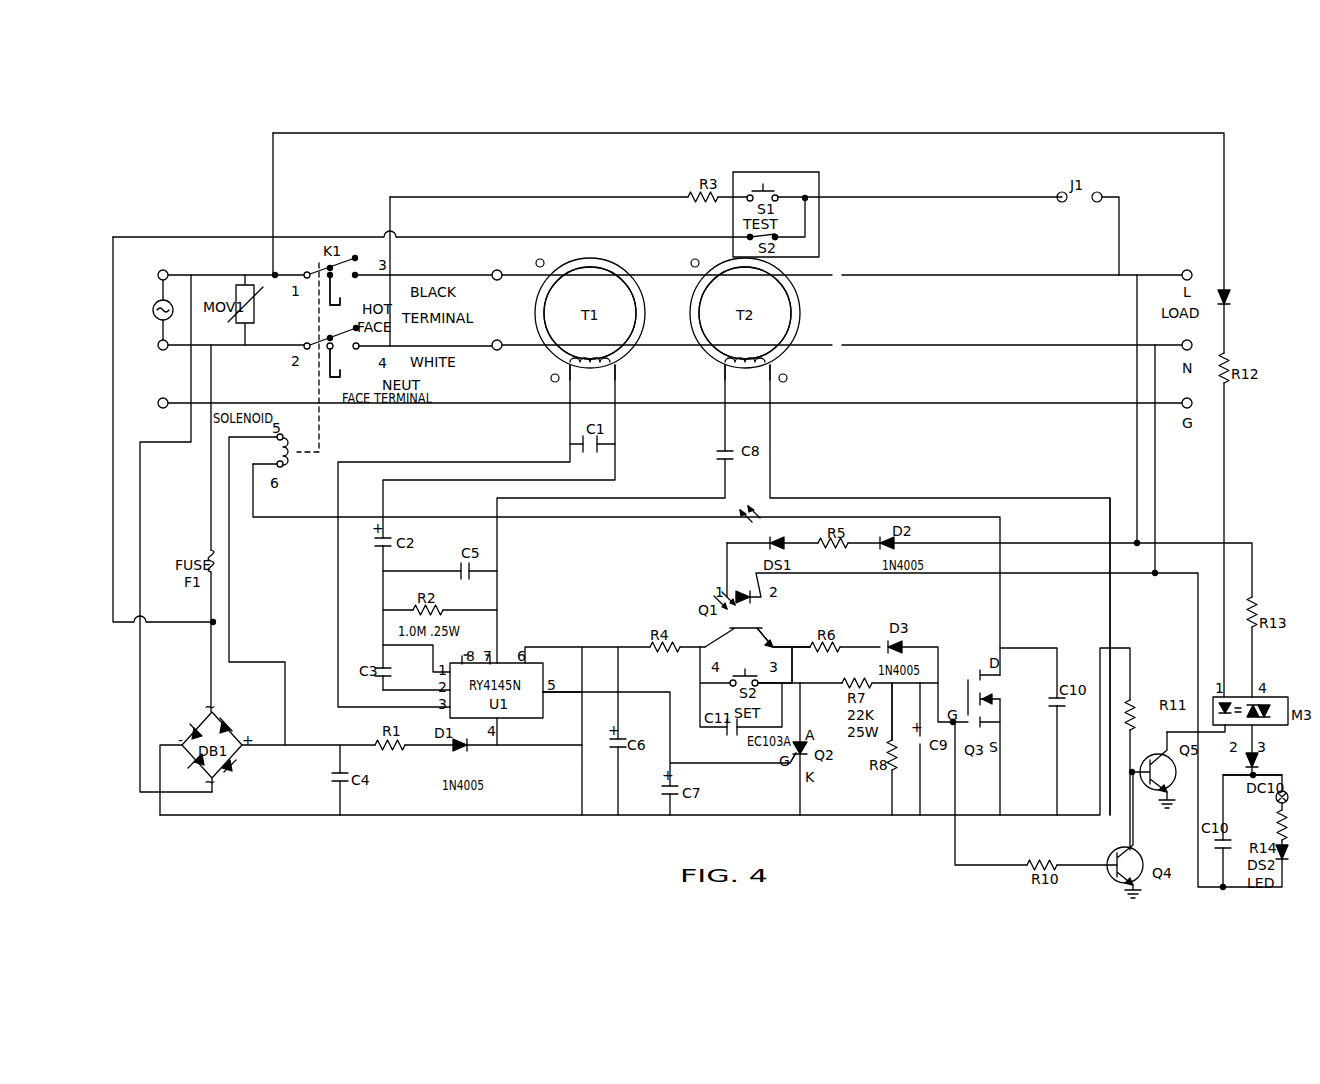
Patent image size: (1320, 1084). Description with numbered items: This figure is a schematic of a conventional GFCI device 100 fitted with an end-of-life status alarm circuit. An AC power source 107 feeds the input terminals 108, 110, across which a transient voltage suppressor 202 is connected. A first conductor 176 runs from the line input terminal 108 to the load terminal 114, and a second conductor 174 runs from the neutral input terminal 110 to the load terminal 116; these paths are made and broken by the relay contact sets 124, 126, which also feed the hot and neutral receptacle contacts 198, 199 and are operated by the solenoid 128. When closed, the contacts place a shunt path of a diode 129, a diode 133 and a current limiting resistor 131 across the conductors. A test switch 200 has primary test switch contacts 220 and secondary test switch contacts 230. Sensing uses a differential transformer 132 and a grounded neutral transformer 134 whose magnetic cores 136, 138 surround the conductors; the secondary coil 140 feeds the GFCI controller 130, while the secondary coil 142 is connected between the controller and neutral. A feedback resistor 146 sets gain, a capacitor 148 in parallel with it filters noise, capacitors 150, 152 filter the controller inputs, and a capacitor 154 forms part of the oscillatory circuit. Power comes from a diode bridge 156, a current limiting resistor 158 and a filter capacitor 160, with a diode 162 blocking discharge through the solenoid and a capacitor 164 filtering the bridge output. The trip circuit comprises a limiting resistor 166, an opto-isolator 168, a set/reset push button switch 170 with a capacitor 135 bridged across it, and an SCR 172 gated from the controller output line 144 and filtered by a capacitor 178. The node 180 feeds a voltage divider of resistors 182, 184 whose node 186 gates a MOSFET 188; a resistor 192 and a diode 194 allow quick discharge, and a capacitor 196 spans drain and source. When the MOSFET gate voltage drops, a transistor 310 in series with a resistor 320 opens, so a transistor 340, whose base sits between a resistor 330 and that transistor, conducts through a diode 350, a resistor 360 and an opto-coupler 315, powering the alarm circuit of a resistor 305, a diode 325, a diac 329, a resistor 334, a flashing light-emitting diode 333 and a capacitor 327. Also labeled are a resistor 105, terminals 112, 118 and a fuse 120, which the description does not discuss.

The ground fault circuit interrupter device 100 is at (358, 835).
The test resistor R3 105 is at (685, 194).
The AC power source 107 is at (154, 310).
The AC line input terminal 108 is at (164, 271).
The AC neutral input terminal 110 is at (160, 348).
The line ground terminal 112 is at (160, 402).
The AC line output terminal 114 is at (1188, 271).
The AC neutral output terminal 116 is at (1188, 341).
The load ground terminal 118 is at (1188, 399).
The fuse F1 120 is at (211, 555).
The first relay contact set 124 is at (323, 272).
The second relay contact set 126 is at (323, 342).
The solenoid 128 is at (289, 468).
The diode 129 is at (785, 541).
The GFCI controller 130 is at (504, 654).
The current limiting resistor 131 is at (852, 543).
The differential transformer 132 is at (642, 286).
The diode 133 is at (910, 543).
The grounded neutral transformer 134 is at (798, 286).
The capacitor 135 is at (728, 734).
The magnetic core 136 is at (555, 283).
The magnetic core 138 is at (710, 283).
The secondary coil 140 is at (577, 356).
The secondary coil 142 is at (731, 356).
The output line 144 is at (544, 694).
The feedback resistor 146 is at (441, 608).
The capacitor 148 is at (463, 569).
The capacitor 150 is at (602, 444).
The capacitor 152 is at (379, 660).
The capacitor 154 is at (719, 454).
The diode bridge 156 is at (218, 721).
The current limiting resistor 158 is at (398, 748).
The filter capacitor 160 is at (614, 748).
The diode 162 is at (458, 752).
The capacitor 164 is at (335, 776).
The limiting resistor 166 is at (678, 645).
The opto-isolator 168 is at (756, 610).
The push button switch 170 is at (760, 681).
The silicon controlled rectifier 172 is at (804, 764).
The second conductor 174 is at (459, 345).
The first conductor 176 is at (459, 275).
The capacitor 178 is at (668, 796).
The node 180 is at (776, 644).
The resistor 182 is at (843, 680).
The resistor 184 is at (889, 774).
The node 186 is at (892, 690).
The MOSFET 188 is at (996, 698).
The resistor 192 is at (843, 645).
The diode 194 is at (905, 643).
The capacitor 196 is at (1066, 712).
The hot receptacle contact 198 is at (341, 303).
The neutral receptacle contact 199 is at (341, 377).
The test switch 200 is at (791, 172).
The transient voltage suppressor 202 is at (256, 300).
The primary test switch contacts 220 is at (767, 194).
The secondary test switch contacts 230 is at (767, 234).
The resistor 305 is at (1262, 609).
The transistor 310 is at (1146, 893).
The opto-coupler 315 is at (1281, 688).
The resistor 320 is at (1052, 859).
The diode 325 is at (1269, 765).
The capacitor 327 is at (1231, 837).
The diac 329 is at (1276, 810).
The resistor 330 is at (1145, 719).
The light-emitting diode 333 is at (1296, 860).
The resistor 334 is at (1255, 776).
The transistor 340 is at (1181, 751).
The diode 350 is at (1236, 291).
The resistor 360 is at (1239, 366).